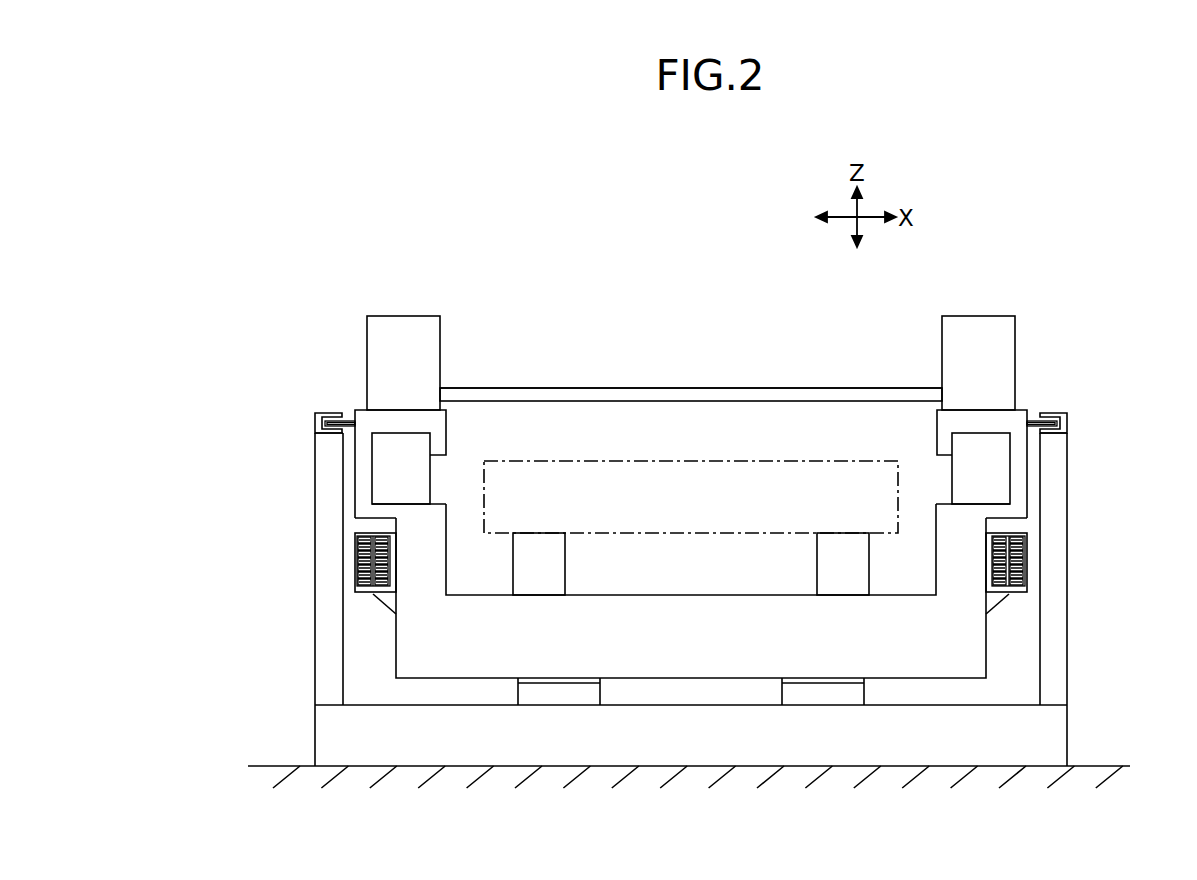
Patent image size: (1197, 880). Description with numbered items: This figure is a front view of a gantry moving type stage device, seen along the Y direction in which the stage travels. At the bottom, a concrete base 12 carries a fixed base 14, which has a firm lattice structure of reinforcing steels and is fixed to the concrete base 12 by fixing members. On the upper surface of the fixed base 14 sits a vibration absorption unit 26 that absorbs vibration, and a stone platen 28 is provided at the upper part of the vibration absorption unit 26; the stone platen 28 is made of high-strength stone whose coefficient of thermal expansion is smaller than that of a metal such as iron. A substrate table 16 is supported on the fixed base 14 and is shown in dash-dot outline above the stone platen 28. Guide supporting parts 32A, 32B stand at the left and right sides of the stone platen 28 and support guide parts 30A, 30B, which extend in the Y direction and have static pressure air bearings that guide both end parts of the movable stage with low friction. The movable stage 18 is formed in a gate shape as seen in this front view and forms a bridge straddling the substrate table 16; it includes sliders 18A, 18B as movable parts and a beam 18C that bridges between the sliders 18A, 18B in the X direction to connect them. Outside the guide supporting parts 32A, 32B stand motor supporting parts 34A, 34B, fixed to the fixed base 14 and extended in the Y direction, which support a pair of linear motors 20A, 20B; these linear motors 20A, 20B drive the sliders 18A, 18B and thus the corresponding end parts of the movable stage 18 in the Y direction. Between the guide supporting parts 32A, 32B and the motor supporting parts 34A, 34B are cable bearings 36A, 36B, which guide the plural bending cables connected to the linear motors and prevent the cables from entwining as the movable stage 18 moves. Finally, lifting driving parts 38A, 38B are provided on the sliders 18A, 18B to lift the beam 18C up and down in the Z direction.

The concrete base 12 is at (1117, 760).
The fixed base 14 is at (1050, 737).
The substrate table 16 is at (677, 460).
The movable stage 18 is at (576, 386).
The slider 18A is at (363, 417).
The slider 18B is at (1018, 415).
The beam 18C is at (792, 388).
The linear motor 20A is at (315, 418).
The linear motor 20B is at (1065, 420).
The vibration absorption unit 26 is at (820, 817).
The stone platen 28 is at (698, 663).
The guide part 30A is at (390, 462).
The guide part 30B is at (998, 467).
The guide supporting part 32A is at (410, 522).
The guide supporting part 32B is at (967, 530).
The motor supporting part 34A is at (318, 637).
The motor supporting part 34B is at (1058, 645).
The cable bearing 36A is at (355, 558).
The cable bearing 36B is at (1027, 557).
The lifting driving part 38A is at (405, 323).
The lifting driving part 38B is at (977, 323).